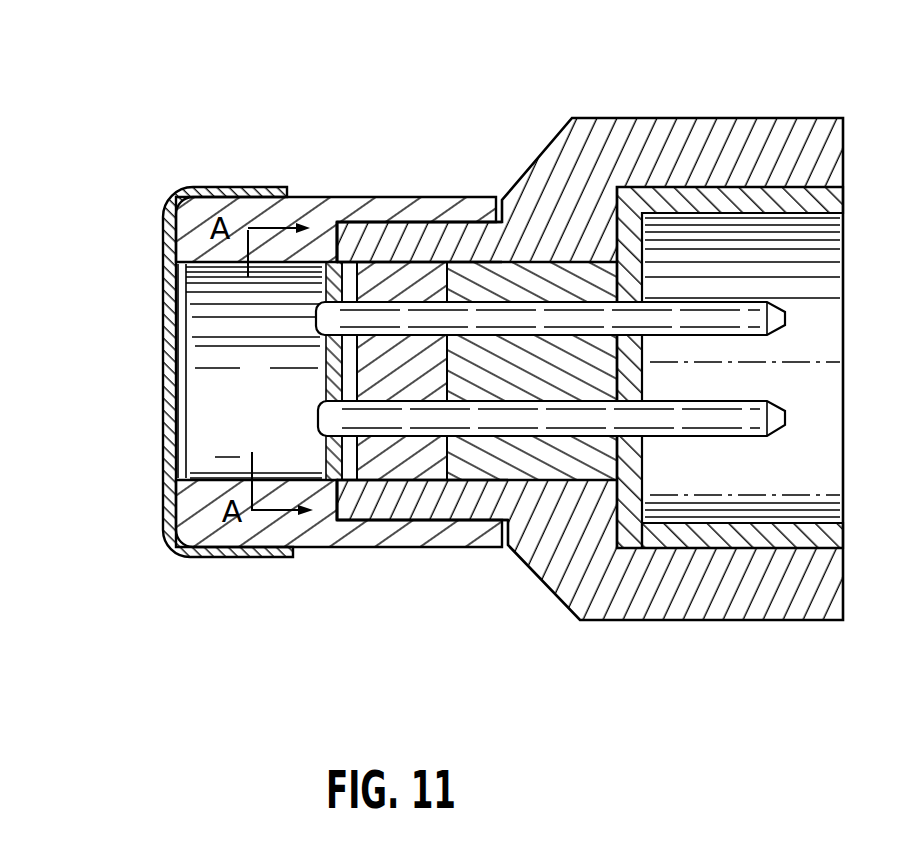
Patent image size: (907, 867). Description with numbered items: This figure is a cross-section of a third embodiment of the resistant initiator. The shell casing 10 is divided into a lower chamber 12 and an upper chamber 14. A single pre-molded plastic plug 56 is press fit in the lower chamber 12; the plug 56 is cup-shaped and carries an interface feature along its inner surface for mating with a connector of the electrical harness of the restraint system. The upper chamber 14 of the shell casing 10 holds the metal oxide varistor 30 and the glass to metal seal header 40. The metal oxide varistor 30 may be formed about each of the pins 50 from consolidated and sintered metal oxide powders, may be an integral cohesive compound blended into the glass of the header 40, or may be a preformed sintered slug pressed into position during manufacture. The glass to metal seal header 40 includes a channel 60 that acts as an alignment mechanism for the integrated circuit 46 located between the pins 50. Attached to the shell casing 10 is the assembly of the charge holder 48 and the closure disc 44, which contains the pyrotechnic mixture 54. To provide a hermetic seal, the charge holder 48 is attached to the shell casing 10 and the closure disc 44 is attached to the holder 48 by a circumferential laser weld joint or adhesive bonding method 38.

The shell casing 10 is at (737, 590).
The lower chamber 12 is at (695, 185).
The upper chamber 14 is at (534, 258).
The metal oxide varistor 30 is at (590, 452).
The circumferential laser weld joint/adhesive bonding method 38 is at (365, 188).
The glass to metal seal header 40 is at (407, 458).
The closure disc 44 is at (167, 448).
The integrated circuit 46 is at (330, 370).
The charge holder 48 is at (257, 523).
The pins 50 is at (773, 323).
The pyrotechnic mixture 54 is at (167, 340).
The pre-molded plastic plug 56 is at (833, 535).
The channel 60 is at (326, 448).